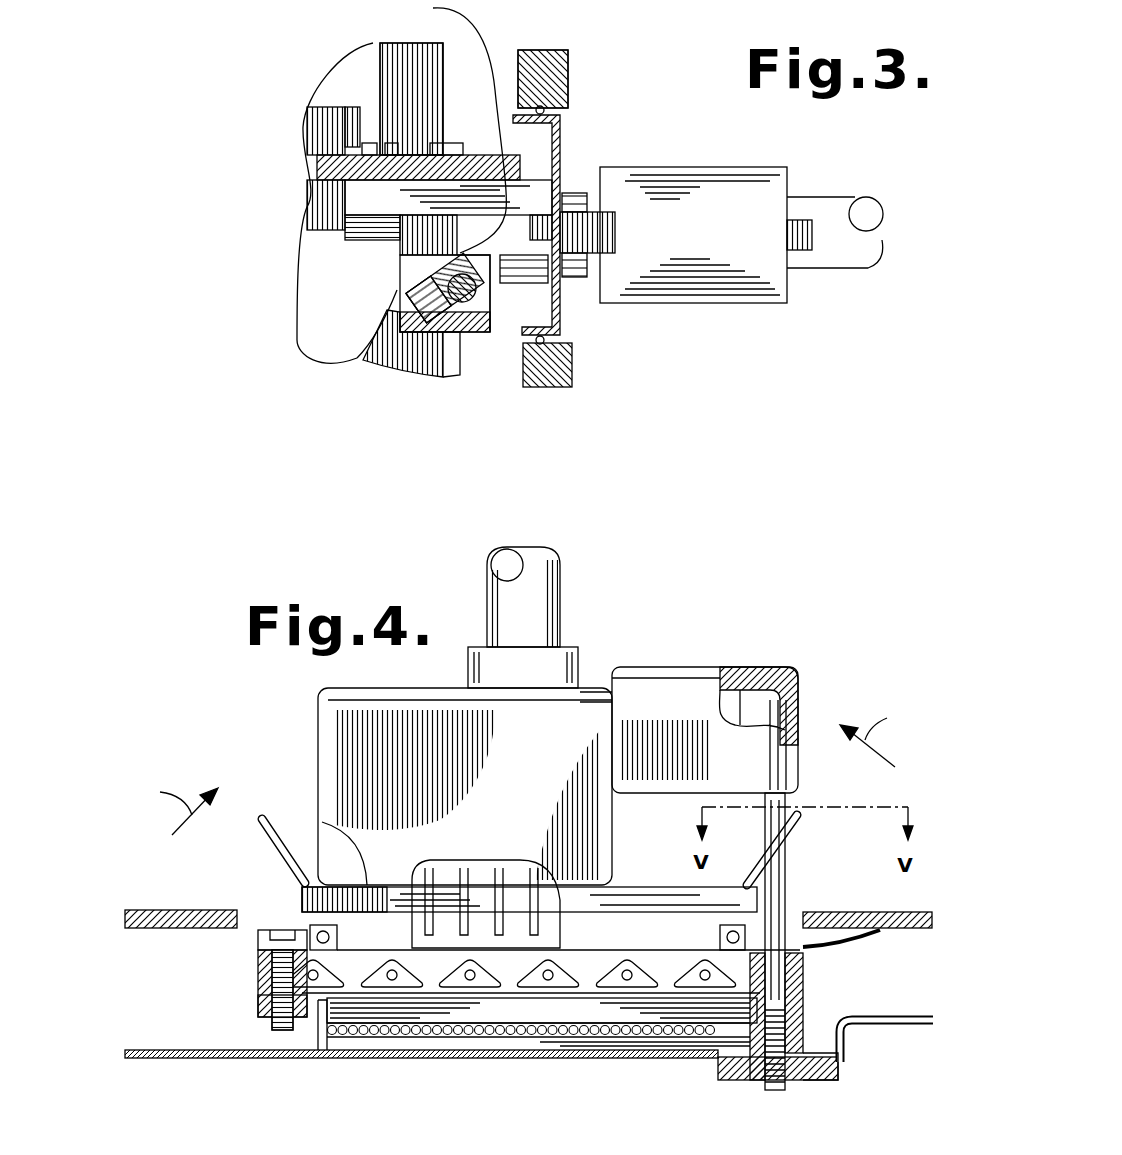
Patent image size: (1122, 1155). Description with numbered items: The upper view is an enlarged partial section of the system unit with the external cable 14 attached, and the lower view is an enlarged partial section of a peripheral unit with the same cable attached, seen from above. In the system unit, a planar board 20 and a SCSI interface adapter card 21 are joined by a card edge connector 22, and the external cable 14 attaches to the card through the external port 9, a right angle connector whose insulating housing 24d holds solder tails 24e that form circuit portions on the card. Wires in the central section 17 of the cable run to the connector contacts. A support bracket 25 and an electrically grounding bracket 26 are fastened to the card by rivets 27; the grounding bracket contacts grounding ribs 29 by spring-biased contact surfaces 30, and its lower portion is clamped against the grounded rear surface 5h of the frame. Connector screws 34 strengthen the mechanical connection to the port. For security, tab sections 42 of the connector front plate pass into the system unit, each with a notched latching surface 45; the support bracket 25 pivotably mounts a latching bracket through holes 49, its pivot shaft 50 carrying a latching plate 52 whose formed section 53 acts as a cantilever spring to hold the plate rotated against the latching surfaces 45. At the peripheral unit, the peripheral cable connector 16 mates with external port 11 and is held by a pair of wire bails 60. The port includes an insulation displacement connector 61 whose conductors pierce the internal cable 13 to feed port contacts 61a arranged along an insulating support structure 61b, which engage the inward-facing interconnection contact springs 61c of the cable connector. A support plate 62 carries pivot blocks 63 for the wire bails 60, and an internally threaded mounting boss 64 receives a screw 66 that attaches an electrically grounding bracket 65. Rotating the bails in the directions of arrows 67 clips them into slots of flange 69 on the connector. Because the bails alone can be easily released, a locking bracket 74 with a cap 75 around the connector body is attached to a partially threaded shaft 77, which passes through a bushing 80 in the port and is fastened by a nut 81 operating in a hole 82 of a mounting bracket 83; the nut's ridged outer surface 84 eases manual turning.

In FIG. 3, the external port 9 is at (572, 189).
In FIG. 3, the external cable 14 is at (653, 167).
In FIG. 4, the external cable 14 is at (318, 705).
In FIG. 3, the central section 17 is at (807, 197).
In FIG. 3, the planar board 20 is at (327, 331).
In FIG. 3, the SCSI interface adapter card 21 is at (333, 187).
In FIG. 3, the card edge connector 22 is at (340, 110).
In FIG. 3, the insulating housing 24d is at (363, 237).
In FIG. 3, the solder tails 24e is at (387, 143).
In FIG. 3, the support bracket 25 is at (403, 288).
In FIG. 3, the electrically grounding bracket 26 is at (563, 317).
In FIG. 3, the rivets 27 is at (437, 140).
In FIG. 3, the grounding ribs 29 is at (572, 57).
In FIG. 3, the spring-biased contact surfaces 30 is at (568, 85).
In FIG. 3, the connector screws 34 is at (802, 255).
In FIG. 3, the tab sections 42 is at (575, 277).
In FIG. 3, the latching surface 45 is at (373, 363).
In FIG. 3, the holes 49 is at (477, 333).
In FIG. 3, the pivot shaft 50 is at (478, 337).
In FIG. 3, the latching plate 52 is at (443, 127).
In FIG. 3, the formed section 53 is at (433, 350).
In FIG. 3, the grounded rear surface 5h is at (572, 367).
In FIG. 4, the grounded rear surface 5h is at (207, 910).
In FIG. 4, the external port 11 is at (310, 1030).
In FIG. 4, the internal cable 13 is at (415, 1038).
In FIG. 4, the peripheral cable connector 16 is at (318, 765).
In FIG. 4, the wire bails 60 is at (277, 823).
In FIG. 4, the connector 61 is at (258, 985).
In FIG. 4, the port contacts 61a is at (512, 893).
In FIG. 4, the insulating support structure 61b is at (522, 930).
In FIG. 4, the interconnection contact springs 61c is at (455, 870).
In FIG. 4, the support plate 62 is at (256, 955).
In FIG. 4, the pivot blocks 63 is at (315, 928).
In FIG. 4, the mounting boss 64 is at (258, 1018).
In FIG. 4, the electrically grounding bracket 65 is at (830, 942).
In FIG. 4, the screw 66 is at (258, 1055).
In FIG. 4, the arrows 67 is at (523, 771).
In FIG. 4, the flange 69 is at (325, 849).
In FIG. 4, the locking bracket 74 is at (700, 667).
In FIG. 4, the cap 75 is at (780, 667).
In FIG. 4, the partially threaded shaft 77 is at (787, 898).
In FIG. 4, the bushing 80 is at (803, 1005).
In FIG. 4, the nut 81 is at (818, 1080).
In FIG. 4, the hole 82 is at (718, 1078).
In FIG. 4, the mounting bracket 83 is at (498, 1058).
In FIG. 4, the outer surface 84 is at (842, 1065).